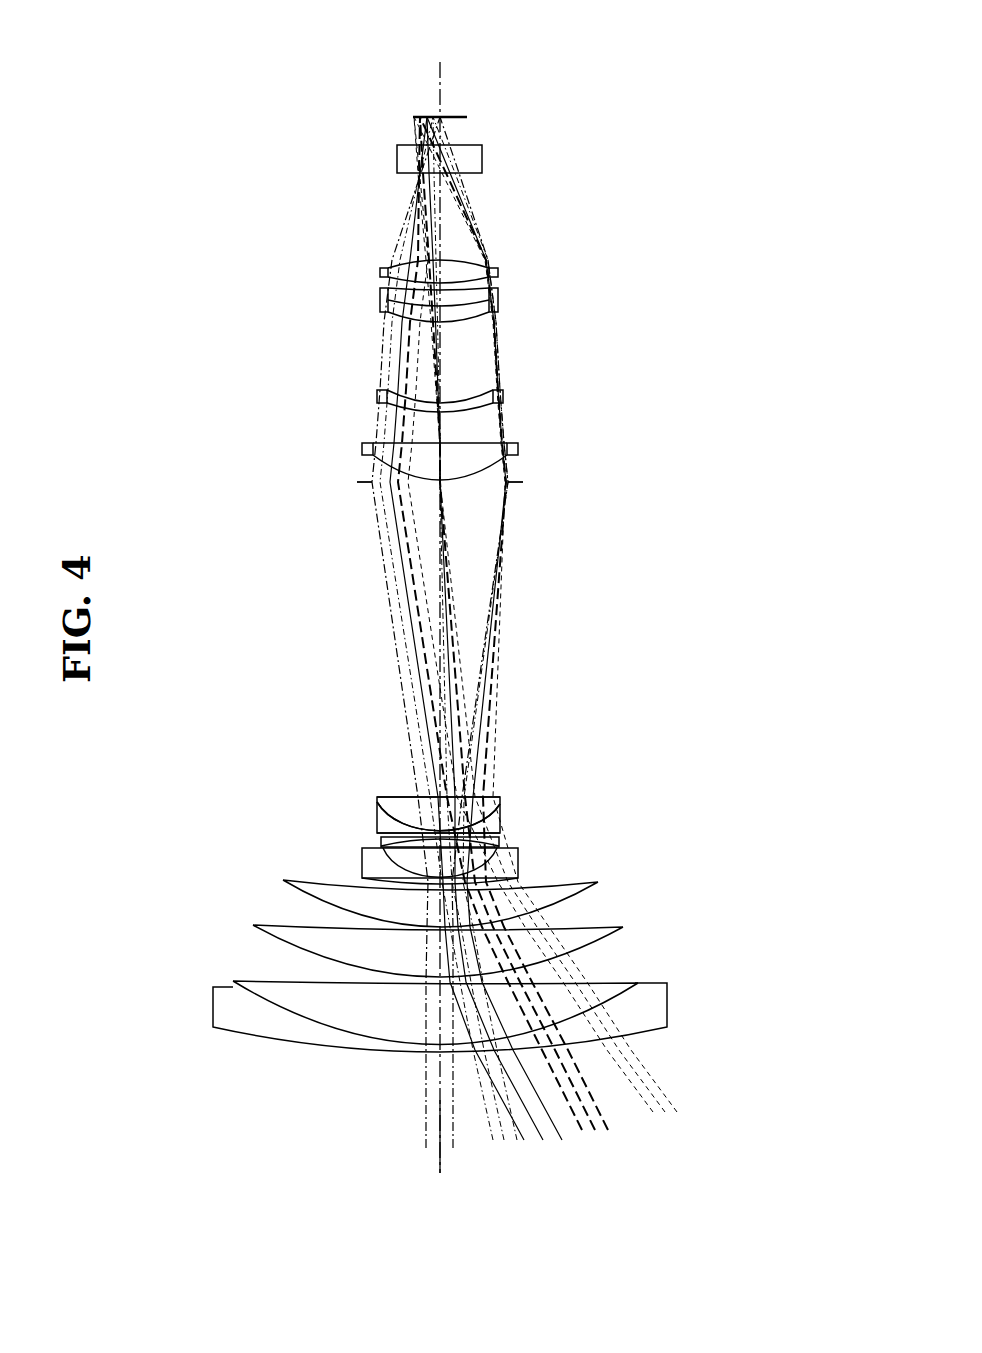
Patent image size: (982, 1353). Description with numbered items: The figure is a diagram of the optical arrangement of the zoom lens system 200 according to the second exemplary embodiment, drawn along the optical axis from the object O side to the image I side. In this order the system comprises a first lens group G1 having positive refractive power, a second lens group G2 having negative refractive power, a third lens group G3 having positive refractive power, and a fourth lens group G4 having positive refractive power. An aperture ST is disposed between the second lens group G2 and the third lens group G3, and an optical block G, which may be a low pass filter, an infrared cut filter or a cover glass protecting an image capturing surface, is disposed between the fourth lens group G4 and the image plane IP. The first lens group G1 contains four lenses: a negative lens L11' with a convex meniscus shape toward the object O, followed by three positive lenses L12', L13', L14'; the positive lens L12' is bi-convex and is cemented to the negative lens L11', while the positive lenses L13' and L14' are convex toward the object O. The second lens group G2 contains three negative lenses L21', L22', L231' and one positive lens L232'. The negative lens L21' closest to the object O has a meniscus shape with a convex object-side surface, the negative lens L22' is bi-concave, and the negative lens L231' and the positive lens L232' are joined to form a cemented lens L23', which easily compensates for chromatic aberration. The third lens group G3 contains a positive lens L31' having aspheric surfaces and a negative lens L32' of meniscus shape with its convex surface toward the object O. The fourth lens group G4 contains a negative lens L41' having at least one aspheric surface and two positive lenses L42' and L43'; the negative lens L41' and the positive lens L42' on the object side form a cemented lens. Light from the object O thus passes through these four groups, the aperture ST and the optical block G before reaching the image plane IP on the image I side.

The zoom lens system 200 is at (190, 222).
The optical block G is at (397, 158).
The image plane IP is at (467, 117).
The image I is at (441, 607).
The object O is at (441, 1149).
The aperture ST is at (520, 483).
The first lens group G1 is at (190, 880).
The second lens group G2 is at (305, 797).
The third lens group G3 is at (305, 388).
The fourth lens group G4 is at (308, 258).
The negative lens L11' is at (484, 1024).
The positive lens L12' is at (482, 999).
The positive lens L13' is at (459, 955).
The positive lens L14' is at (489, 911).
The negative lens L21' is at (514, 872).
The negative lens L22' is at (511, 837).
The cemented lens L23' is at (502, 769).
The negative lens L231' is at (479, 799).
The positive lens L232' is at (478, 760).
The positive lens L31' is at (478, 453).
The negative lens L32' is at (486, 394).
The negative lens L41' is at (485, 315).
The positive lens L42' is at (498, 285).
The positive lens L43' is at (481, 250).